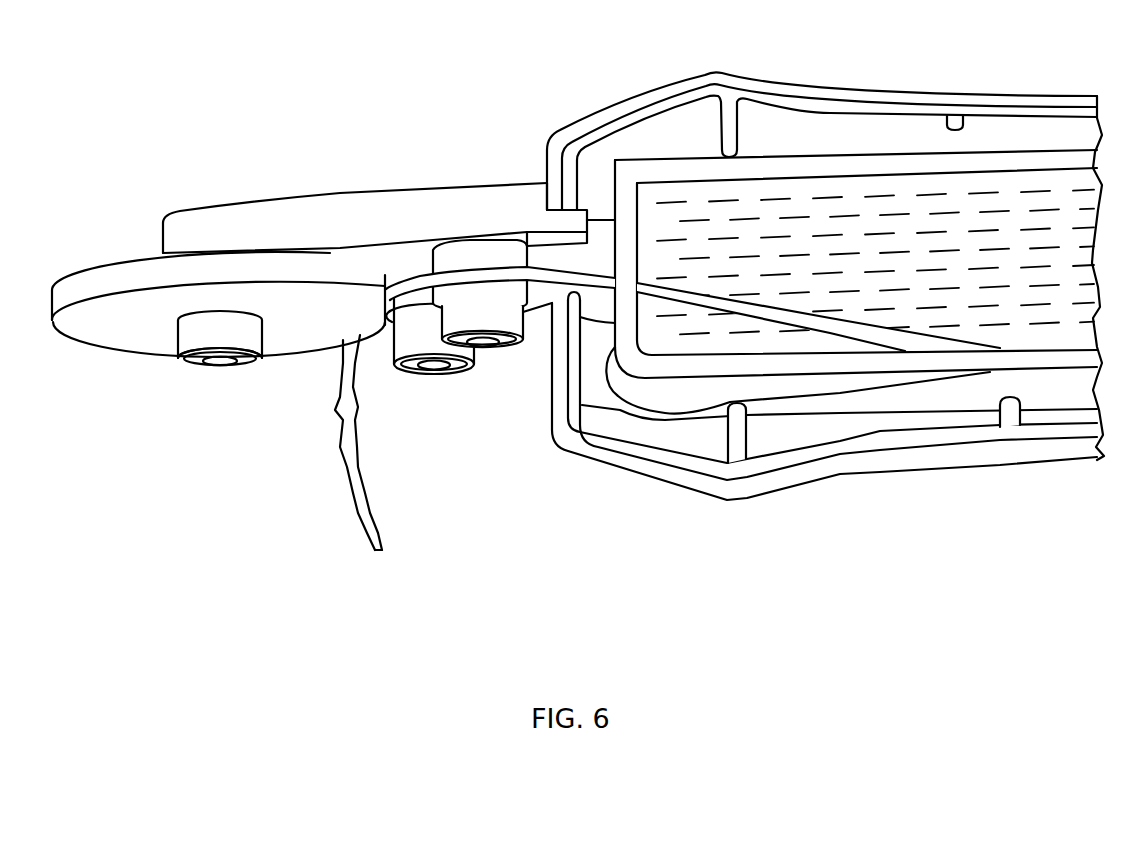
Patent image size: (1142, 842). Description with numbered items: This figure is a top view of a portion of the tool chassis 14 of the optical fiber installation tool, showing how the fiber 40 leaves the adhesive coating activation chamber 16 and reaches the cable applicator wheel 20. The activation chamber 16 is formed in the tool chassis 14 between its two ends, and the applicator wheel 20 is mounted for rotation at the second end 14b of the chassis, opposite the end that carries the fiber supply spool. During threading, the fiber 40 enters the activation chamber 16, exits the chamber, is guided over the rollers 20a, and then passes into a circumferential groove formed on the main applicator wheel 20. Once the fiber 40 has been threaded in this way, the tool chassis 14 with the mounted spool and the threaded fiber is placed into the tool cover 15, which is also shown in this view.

The tool chassis 14 is at (1043, 160).
The second end of the chassis 14b is at (256, 223).
The tool cover 15 is at (963, 118).
The adhesive coating activation chamber 16 is at (774, 180).
The cable applicator wheel 20 is at (95, 327).
The rollers 20a is at (402, 282).
The fiber 40 is at (348, 410).